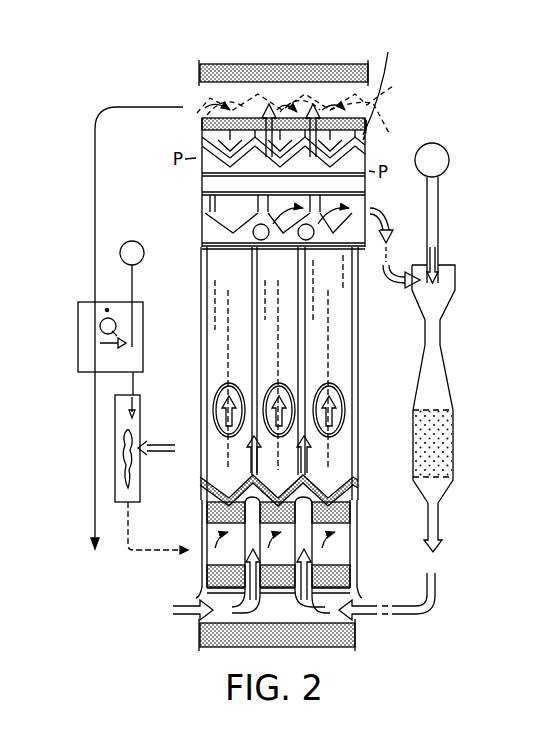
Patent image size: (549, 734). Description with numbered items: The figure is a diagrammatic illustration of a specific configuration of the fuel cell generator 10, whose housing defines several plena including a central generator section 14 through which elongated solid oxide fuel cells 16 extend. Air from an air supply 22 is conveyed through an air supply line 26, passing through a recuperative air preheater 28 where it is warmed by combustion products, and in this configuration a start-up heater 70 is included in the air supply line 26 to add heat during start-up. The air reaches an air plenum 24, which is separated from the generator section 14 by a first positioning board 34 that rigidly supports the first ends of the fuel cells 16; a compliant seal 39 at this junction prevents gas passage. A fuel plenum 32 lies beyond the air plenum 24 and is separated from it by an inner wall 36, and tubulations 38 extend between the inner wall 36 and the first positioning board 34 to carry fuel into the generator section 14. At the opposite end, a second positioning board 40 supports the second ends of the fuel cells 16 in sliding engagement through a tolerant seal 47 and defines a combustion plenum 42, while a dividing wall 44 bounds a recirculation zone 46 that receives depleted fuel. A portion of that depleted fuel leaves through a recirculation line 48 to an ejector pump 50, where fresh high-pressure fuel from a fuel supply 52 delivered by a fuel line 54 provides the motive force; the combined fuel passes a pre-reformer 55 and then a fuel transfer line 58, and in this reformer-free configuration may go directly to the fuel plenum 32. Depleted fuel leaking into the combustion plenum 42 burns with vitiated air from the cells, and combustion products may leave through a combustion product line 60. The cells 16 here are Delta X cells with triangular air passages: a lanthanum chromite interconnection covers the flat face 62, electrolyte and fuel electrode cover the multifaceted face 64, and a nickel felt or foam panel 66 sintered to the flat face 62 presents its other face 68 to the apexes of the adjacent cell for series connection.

The fuel cell generator 10 is at (420, 49).
The generator section 14 is at (194, 397).
The fuel cells 16 is at (395, 88).
The air supply 22 is at (130, 241).
The air plenum 24 is at (338, 542).
The air supply line 26 is at (127, 551).
The recuperative air preheater 28 is at (78, 332).
The fuel plenum 32 is at (353, 625).
The first positioning board 34 is at (338, 513).
The inner wall 36 is at (338, 578).
The tubulations 38 is at (281, 557).
The seal 39 is at (322, 485).
The second positioning board 40 is at (198, 196).
The combustion plenum 42 is at (198, 92).
The dividing wall 44 is at (198, 262).
The recirculation zone 46 is at (198, 233).
The tolerant seal 47 is at (198, 180).
The recirculation line 48 is at (398, 213).
The ejector pump 50 is at (445, 365).
The fuel supply 52 is at (448, 150).
The fuel line 54 is at (440, 213).
The pre-reformer 55 is at (453, 442).
The fuel transfer line 58 is at (437, 593).
The combustion product line 60 is at (122, 105).
The flat face 62 is at (296, 120).
The multifaceted face 64 is at (345, 338).
The nickel felt or nickel foam panel 66 is at (193, 133).
The panel face 68 is at (382, 82).
The start-up heater 70 is at (115, 462).